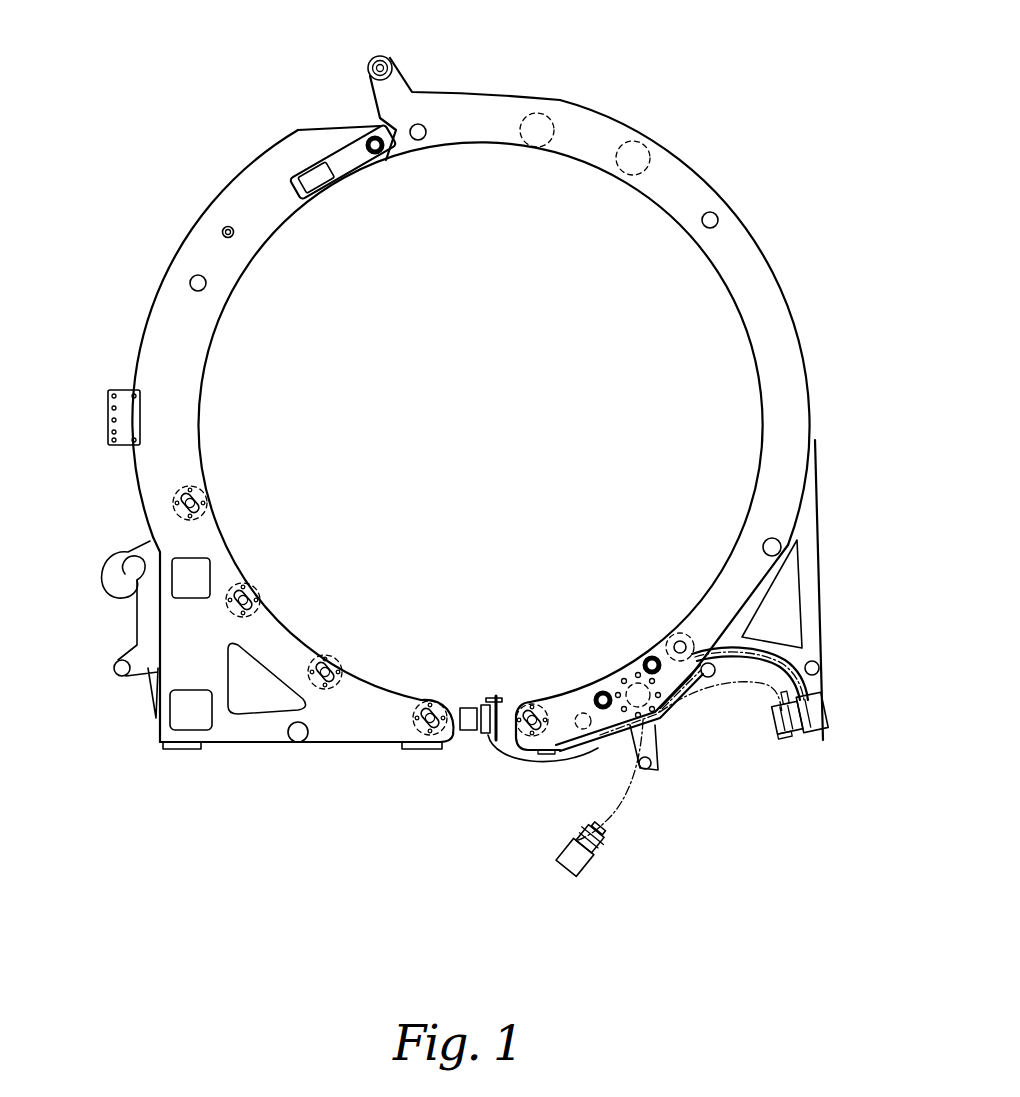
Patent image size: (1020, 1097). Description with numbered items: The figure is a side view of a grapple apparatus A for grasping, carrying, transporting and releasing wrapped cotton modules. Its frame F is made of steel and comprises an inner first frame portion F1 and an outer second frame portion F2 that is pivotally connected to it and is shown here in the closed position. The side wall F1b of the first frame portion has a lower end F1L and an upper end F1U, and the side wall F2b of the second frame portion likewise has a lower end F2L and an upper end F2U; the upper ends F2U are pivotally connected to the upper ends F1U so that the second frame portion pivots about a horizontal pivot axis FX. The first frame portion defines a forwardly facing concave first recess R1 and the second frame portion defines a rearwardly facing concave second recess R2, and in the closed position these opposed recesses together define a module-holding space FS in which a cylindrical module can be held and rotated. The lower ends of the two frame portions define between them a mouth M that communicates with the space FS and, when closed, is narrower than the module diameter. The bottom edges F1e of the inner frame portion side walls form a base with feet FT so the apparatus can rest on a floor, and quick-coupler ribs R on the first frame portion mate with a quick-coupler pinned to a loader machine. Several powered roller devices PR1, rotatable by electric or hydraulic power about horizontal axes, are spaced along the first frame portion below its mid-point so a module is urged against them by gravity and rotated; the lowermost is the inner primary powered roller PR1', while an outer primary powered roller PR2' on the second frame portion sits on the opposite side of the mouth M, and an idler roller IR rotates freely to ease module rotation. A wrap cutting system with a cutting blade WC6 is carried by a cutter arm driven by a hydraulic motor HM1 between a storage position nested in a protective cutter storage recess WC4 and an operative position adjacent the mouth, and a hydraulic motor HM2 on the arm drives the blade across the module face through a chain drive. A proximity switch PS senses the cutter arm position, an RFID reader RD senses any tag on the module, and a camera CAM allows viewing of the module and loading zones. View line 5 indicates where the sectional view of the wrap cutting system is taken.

The grapple apparatus A is at (745, 176).
The frame F is at (820, 404).
The first frame portion F1 is at (200, 231).
The upper ends of first frame portion side walls F1U is at (322, 136).
The second side wall of first frame portion F1b is at (170, 316).
The lower ends of first frame portion side walls F1L is at (425, 692).
The bottom edges F1e is at (280, 746).
The second frame portion F2 is at (767, 256).
The upper ends of second frame portion side walls F2U is at (415, 92).
The second side wall of second frame portion F2b is at (790, 332).
The lower ends of second frame portion side walls F2L is at (556, 710).
The pivot axis FX is at (375, 153).
The module-holding space FS is at (518, 398).
The feet FT is at (186, 752).
The quick-coupler ribs R is at (135, 618).
The first recess R1 is at (212, 437).
The second concave recess R2 is at (748, 399).
The RFID transceiver/reader RD is at (545, 122).
The camera CAM is at (640, 150).
The powered roller devices PR1 is at (271, 579).
The inner primary powered roller PR1' is at (388, 745).
The outer primary powered roller PR2' is at (521, 754).
The proximity switch PS is at (606, 740).
The idler roller IR is at (675, 640).
The hydraulic motor HM1 is at (658, 706).
The hydraulic motor HM2 is at (466, 708).
The cutter storage recess WC4 is at (777, 657).
The cutting blade WC6 is at (500, 700).
The mouth M is at (468, 742).
The view line 5- 5 is at (458, 603).